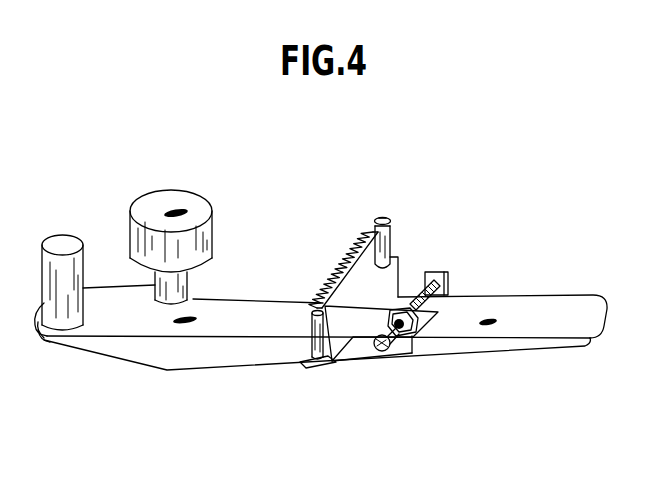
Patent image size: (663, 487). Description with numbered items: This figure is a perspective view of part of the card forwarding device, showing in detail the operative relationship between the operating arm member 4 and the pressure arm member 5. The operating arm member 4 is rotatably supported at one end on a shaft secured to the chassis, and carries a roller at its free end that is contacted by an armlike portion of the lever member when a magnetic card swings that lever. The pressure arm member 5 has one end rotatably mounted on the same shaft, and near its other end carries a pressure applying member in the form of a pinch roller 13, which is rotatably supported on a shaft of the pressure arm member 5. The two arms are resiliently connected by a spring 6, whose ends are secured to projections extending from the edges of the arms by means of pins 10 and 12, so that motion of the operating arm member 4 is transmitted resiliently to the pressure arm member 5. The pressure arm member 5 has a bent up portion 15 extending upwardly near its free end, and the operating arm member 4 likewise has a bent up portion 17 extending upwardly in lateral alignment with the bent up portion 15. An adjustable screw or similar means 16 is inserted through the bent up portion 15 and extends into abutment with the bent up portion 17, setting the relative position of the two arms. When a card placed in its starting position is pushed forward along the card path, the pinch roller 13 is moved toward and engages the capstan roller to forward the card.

The operating arm member 4 is at (488, 338).
The pressure arm member 5 is at (152, 330).
The spring 6 is at (362, 252).
The pin 10 is at (330, 363).
The pin 12 is at (388, 230).
The pinch roller 13 is at (213, 242).
The bent up portion 15 is at (420, 342).
The adjustable screw 16 is at (387, 352).
The bent up portion 17 is at (447, 272).